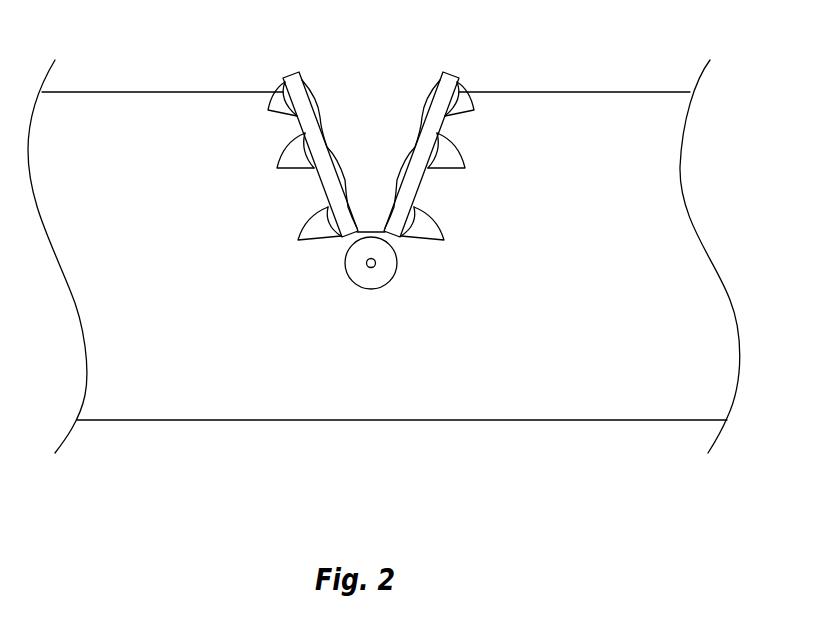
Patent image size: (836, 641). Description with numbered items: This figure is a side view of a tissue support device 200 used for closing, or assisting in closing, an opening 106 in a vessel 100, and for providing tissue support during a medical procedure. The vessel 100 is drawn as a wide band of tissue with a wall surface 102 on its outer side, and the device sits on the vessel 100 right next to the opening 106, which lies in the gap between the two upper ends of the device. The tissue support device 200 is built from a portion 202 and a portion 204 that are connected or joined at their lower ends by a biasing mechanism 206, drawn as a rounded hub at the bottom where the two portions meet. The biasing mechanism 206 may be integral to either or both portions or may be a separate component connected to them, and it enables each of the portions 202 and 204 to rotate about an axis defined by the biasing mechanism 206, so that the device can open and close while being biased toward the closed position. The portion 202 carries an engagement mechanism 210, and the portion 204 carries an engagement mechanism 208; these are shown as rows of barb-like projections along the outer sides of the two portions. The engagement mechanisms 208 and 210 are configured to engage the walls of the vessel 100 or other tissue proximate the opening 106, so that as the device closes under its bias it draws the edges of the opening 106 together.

The vessel 100 is at (630, 91).
The panel surface 102 is at (714, 236).
The opening 106 is at (358, 84).
The tissue support device 200 is at (397, 202).
The portion 202 is at (346, 221).
The portion 204 is at (396, 221).
The biasing mechanism 206 is at (380, 277).
The engagement mechanism 208 is at (491, 98).
The engagement mechanism 210 is at (251, 98).